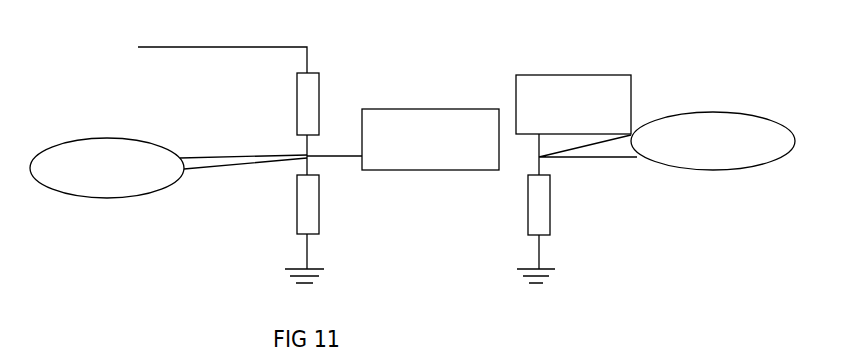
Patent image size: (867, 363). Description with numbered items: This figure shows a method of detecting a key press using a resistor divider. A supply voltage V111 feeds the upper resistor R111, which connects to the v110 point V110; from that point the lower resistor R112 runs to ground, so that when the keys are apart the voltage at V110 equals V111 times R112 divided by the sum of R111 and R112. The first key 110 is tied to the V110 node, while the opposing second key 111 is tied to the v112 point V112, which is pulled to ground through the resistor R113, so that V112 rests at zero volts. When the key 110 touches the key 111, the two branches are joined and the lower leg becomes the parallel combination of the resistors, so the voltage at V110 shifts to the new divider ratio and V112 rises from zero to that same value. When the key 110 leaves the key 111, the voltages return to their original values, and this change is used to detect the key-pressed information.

The supply voltage V111 is at (222, 38).
The resistor R111 is at (259, 124).
The resistor R112 is at (277, 229).
The resistor R113 is at (564, 229).
The v110 point V110 is at (168, 168).
The v112 point V112 is at (667, 141).
The Key110 110 is at (403, 139).
The Key111 111 is at (573, 125).